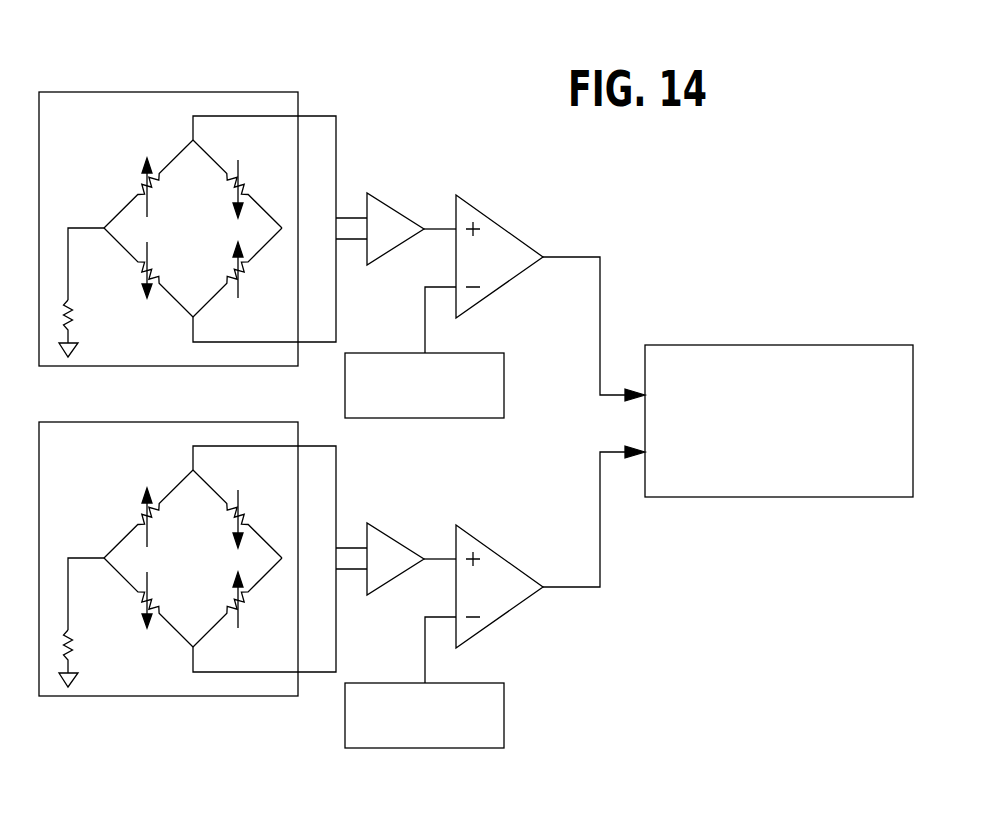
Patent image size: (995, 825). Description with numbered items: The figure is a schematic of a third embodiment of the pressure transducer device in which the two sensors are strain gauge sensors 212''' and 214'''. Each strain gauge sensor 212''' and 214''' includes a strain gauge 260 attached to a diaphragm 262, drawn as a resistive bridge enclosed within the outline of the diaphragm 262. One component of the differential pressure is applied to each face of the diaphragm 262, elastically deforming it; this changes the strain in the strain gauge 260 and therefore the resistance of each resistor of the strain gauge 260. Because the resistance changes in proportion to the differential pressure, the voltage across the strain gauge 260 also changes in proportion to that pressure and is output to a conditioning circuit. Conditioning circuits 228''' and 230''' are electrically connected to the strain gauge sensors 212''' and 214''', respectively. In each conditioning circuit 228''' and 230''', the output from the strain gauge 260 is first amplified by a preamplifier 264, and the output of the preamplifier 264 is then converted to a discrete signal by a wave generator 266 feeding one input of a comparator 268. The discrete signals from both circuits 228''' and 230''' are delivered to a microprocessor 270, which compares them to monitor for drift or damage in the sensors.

The strain gauge sensor 212''' is at (264, 210).
The strain gauge sensor 214''' is at (181, 612).
The conditioning circuit 228''' is at (618, 284).
The conditioning circuit 230''' is at (633, 572).
The strain gauge 260 is at (122, 208).
The diaphragm 262 is at (167, 92).
The preamplifier 264 is at (392, 252).
The wave generator 266 is at (504, 378).
The comparator 268 is at (487, 297).
The microprocessor 270 is at (735, 345).